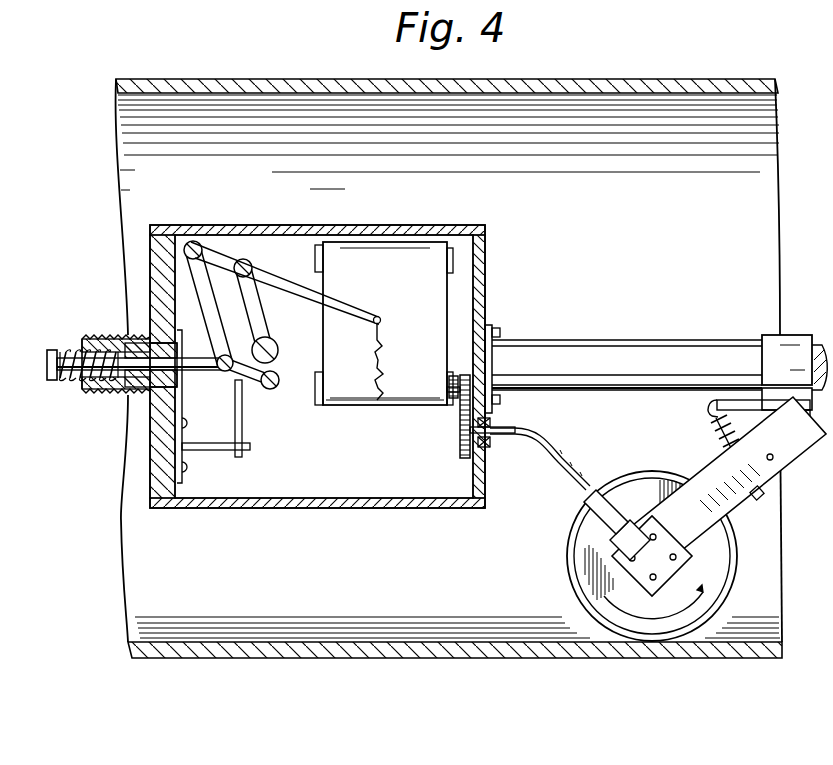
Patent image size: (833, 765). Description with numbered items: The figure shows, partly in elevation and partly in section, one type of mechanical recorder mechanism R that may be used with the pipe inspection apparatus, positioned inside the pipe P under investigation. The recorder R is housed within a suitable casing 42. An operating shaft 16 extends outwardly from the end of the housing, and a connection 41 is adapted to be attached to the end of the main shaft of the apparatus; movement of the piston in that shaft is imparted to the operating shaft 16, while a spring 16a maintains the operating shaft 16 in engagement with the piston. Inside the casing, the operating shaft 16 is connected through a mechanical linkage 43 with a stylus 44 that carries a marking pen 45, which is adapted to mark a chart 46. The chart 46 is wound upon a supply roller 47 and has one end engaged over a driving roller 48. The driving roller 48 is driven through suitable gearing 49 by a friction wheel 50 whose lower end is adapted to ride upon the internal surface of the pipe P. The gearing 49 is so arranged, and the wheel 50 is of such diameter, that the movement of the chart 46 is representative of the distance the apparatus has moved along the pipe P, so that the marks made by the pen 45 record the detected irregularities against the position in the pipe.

The pipe P is at (672, 80).
The recorder mechanism R is at (437, 223).
The operating shaft 16 is at (47, 362).
The spring 16a is at (70, 380).
The connection 41 is at (120, 334).
The casing 42 is at (205, 226).
The mechanical linkage 43 is at (257, 306).
The stylus 44 is at (365, 302).
The marking pen 45 is at (382, 320).
The chart 46 is at (346, 401).
The supply roller 47 is at (450, 270).
The driving roller 48 is at (450, 408).
The gearing 49 is at (465, 375).
The friction wheel 50 is at (642, 485).